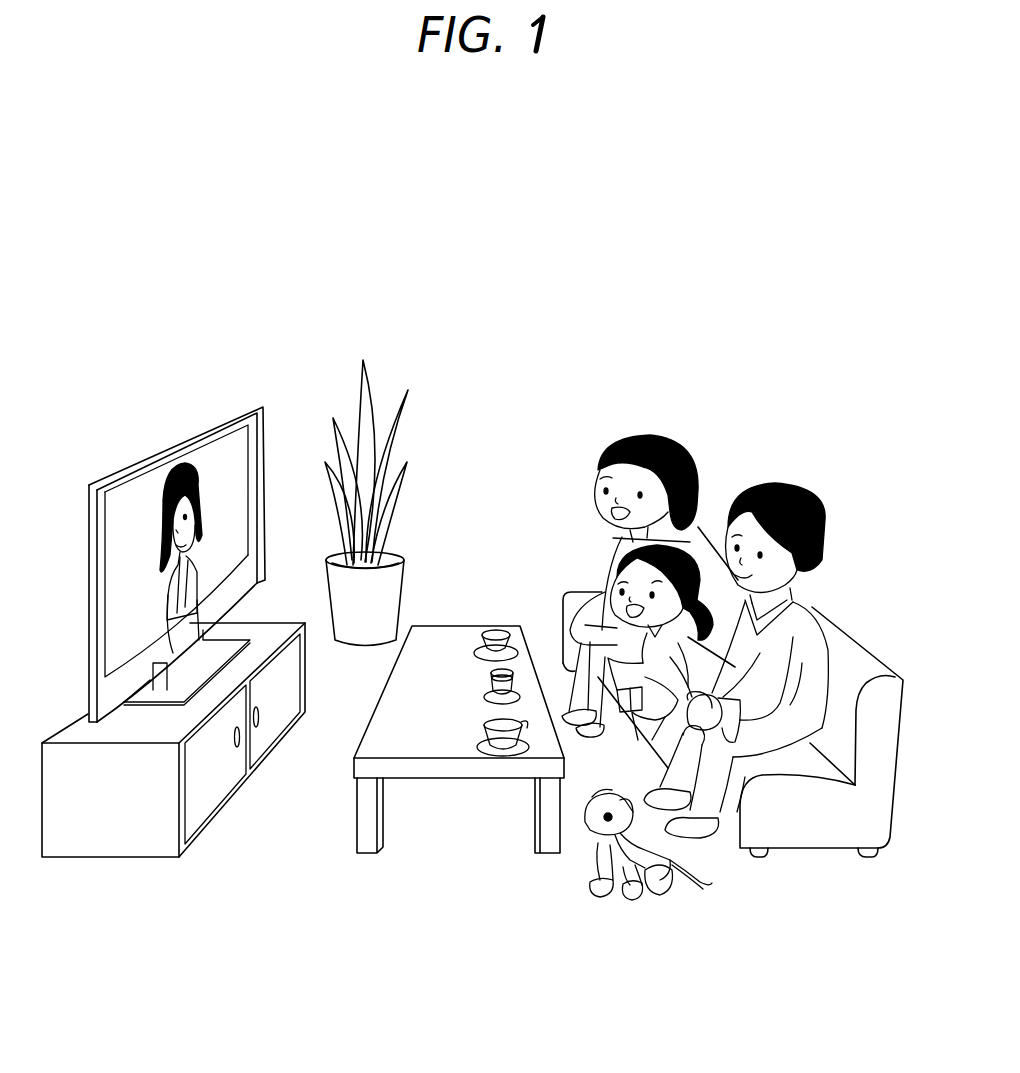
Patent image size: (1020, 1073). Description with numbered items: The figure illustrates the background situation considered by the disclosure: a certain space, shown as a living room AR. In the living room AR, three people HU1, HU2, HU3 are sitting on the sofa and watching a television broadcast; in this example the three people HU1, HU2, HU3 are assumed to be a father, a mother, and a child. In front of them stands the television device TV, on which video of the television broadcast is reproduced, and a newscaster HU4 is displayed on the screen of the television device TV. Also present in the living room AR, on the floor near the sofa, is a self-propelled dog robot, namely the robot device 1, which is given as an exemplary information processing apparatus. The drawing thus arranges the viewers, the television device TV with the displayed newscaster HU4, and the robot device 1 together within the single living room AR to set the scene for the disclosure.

The living room AR is at (468, 184).
The television device TV is at (245, 413).
The newscaster HU4 is at (168, 487).
The person (child) HU3 is at (654, 437).
The person (mother) HU2 is at (700, 557).
The person (father) HU1 is at (781, 484).
The robot device 1 is at (659, 895).